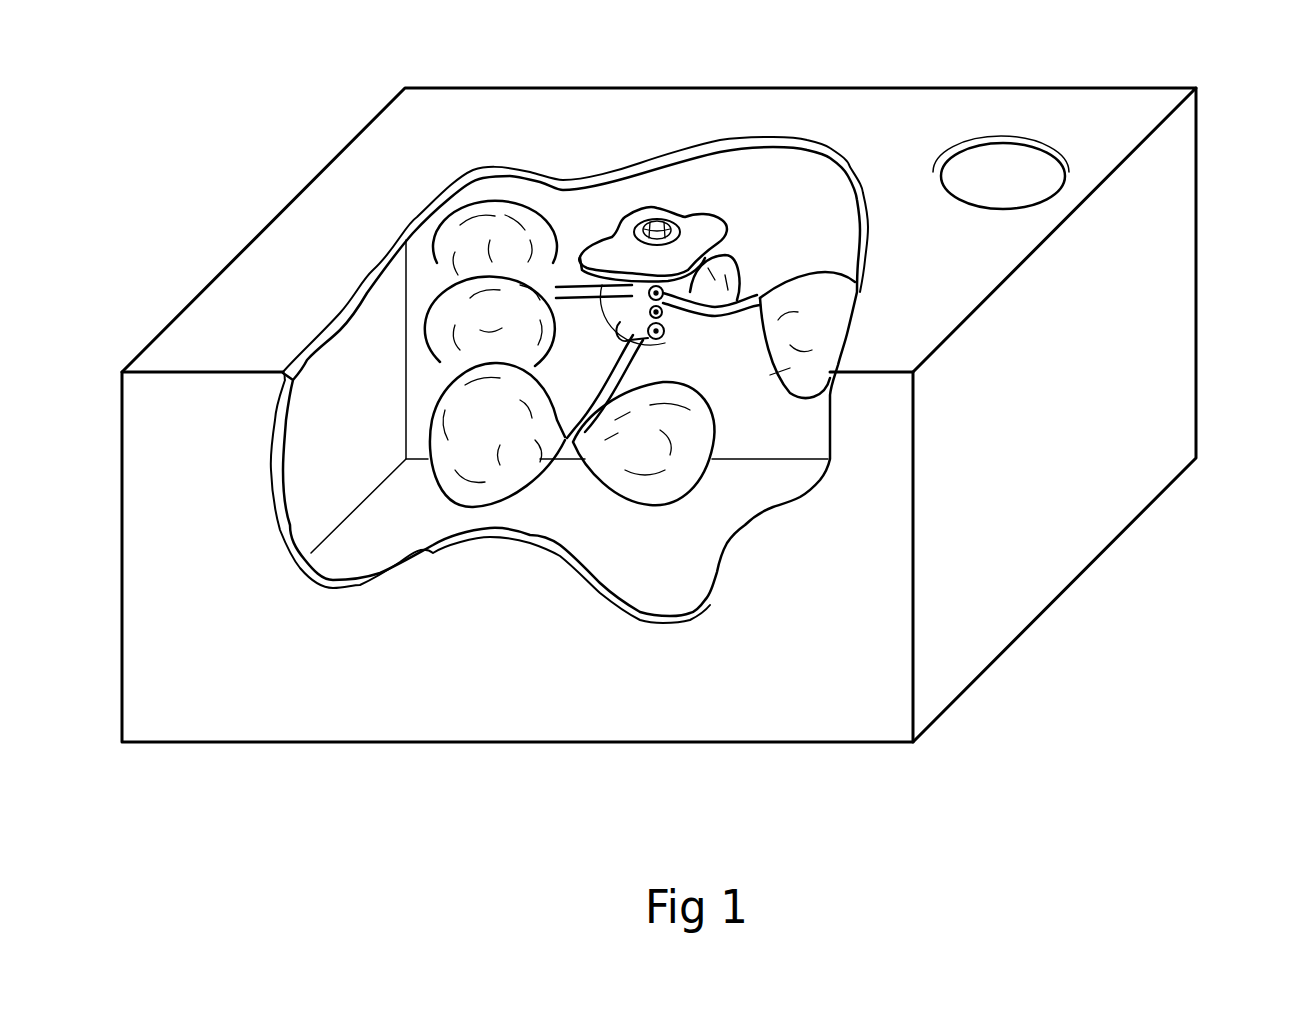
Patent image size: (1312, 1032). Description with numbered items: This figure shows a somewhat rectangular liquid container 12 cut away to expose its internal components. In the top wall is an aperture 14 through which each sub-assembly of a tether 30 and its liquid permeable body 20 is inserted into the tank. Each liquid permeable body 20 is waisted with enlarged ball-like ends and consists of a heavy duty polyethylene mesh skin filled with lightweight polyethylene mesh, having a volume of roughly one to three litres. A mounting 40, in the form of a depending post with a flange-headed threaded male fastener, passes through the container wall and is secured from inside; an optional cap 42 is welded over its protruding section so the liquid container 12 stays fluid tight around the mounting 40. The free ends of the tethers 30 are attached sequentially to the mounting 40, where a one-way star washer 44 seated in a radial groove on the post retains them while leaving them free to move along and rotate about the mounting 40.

The liquid container 12 is at (978, 567).
The aperture 14 is at (1032, 138).
The liquid permeable body 20 is at (460, 485).
The tether 30 is at (580, 287).
The mounting 40 is at (670, 327).
The cap 42 is at (657, 223).
The one-way star washer 44 is at (660, 342).